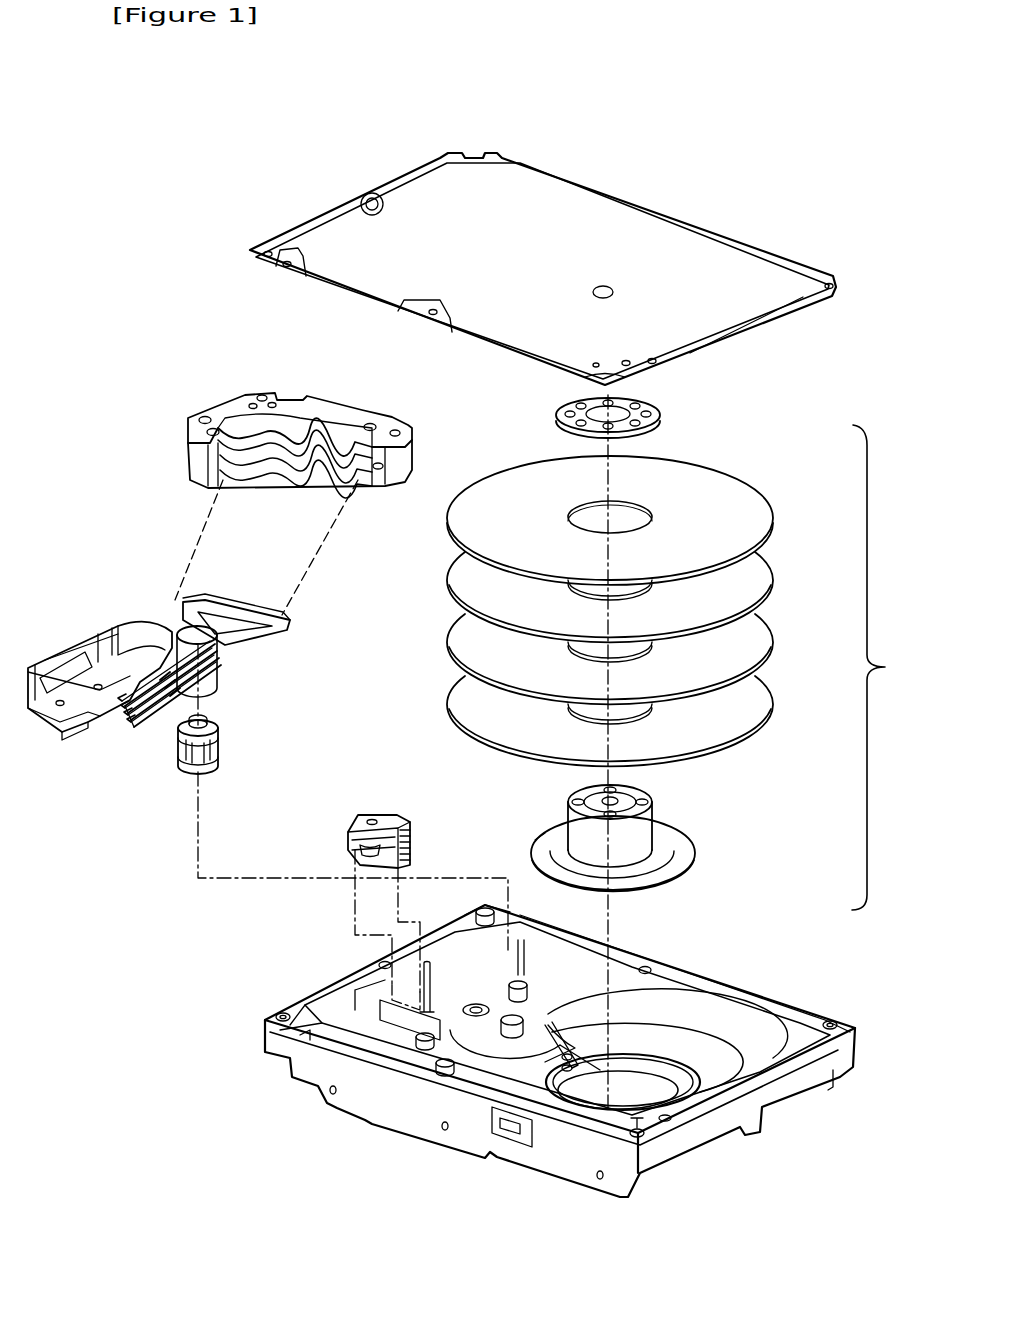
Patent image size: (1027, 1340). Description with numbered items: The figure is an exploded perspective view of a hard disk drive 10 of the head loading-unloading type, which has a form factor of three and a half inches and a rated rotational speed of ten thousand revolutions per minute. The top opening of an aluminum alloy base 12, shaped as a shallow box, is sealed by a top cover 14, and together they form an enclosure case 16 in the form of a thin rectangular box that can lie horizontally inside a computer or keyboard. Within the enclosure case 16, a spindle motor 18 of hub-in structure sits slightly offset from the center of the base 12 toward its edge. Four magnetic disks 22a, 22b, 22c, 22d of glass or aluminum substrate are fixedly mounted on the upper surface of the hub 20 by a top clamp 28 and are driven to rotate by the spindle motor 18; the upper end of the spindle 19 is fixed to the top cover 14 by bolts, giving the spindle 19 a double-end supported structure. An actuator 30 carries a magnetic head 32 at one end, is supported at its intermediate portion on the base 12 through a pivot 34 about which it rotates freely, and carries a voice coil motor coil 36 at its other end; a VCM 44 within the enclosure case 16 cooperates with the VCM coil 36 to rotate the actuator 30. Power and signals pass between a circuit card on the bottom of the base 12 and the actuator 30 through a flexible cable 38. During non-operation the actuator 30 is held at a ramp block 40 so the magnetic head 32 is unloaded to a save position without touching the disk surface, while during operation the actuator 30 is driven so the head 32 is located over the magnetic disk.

The hard disk drive 10 is at (817, 253).
The base 12 is at (788, 1003).
The top cover 14 is at (788, 320).
The enclosure case 16 is at (887, 667).
The spindle motor 18 is at (623, 821).
The spindle 19 is at (570, 818).
The hub 20 is at (686, 817).
The magnetic disk 22a is at (757, 700).
The magnetic disk 22b is at (757, 643).
The magnetic disk 22c is at (755, 578).
The magnetic disk 22d is at (753, 518).
The top clamp 28 is at (647, 403).
The actuator 30 is at (160, 724).
The magnetic head 32 is at (131, 717).
The pivot 34 is at (222, 745).
The voice coil motor coil 36 is at (232, 602).
The flexible cable 38 is at (158, 618).
The ramp block 40 is at (348, 826).
The VCM 44 is at (248, 393).